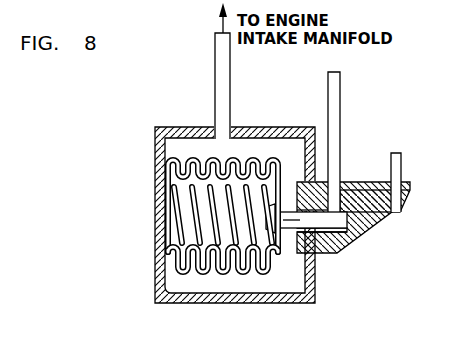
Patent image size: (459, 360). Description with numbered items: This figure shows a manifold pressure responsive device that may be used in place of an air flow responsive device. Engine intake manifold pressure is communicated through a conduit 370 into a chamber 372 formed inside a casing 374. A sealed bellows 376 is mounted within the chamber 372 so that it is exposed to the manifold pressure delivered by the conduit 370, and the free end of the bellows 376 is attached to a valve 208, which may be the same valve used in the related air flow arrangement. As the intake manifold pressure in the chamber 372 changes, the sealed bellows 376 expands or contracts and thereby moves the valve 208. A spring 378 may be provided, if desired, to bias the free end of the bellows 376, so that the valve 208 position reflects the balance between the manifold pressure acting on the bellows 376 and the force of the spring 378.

The conduit 370 is at (215, 85).
The chamber 372 is at (246, 152).
The casing 374 is at (285, 128).
The sealed bellows 376 is at (211, 275).
The spring 378 is at (168, 247).
The valve 208 is at (283, 232).